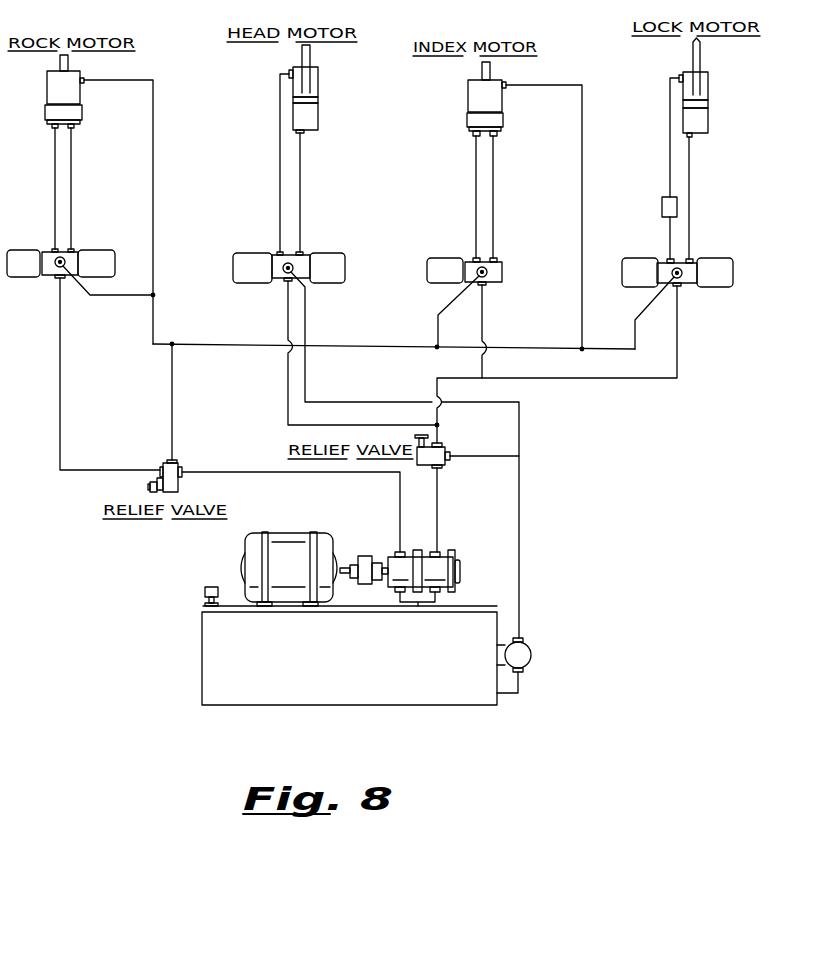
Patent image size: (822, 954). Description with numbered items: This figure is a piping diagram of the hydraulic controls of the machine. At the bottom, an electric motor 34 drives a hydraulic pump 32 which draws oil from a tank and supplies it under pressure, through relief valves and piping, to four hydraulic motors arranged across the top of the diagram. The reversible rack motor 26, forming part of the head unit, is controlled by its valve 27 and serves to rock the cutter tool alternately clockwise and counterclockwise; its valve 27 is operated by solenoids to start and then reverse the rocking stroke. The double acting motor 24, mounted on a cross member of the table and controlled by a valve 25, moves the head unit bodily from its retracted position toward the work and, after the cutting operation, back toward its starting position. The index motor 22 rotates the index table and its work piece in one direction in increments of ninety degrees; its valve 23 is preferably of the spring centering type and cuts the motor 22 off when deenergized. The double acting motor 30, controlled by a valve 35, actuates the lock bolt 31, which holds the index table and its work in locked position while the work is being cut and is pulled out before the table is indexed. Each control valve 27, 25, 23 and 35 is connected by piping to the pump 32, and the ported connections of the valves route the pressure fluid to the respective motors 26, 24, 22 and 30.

The index motor 22 is at (492, 90).
The valve 23 is at (497, 267).
The double acting pressure differential operated motor 24 is at (310, 115).
The valve 25 is at (300, 265).
The rack motor 26 is at (70, 95).
The valve 27 is at (72, 258).
The double acting motor 30 is at (702, 127).
The lock bolt 31 is at (697, 58).
The hydraulic pump 32 is at (438, 568).
The electric motor 34 is at (292, 537).
The valve 35 is at (693, 263).